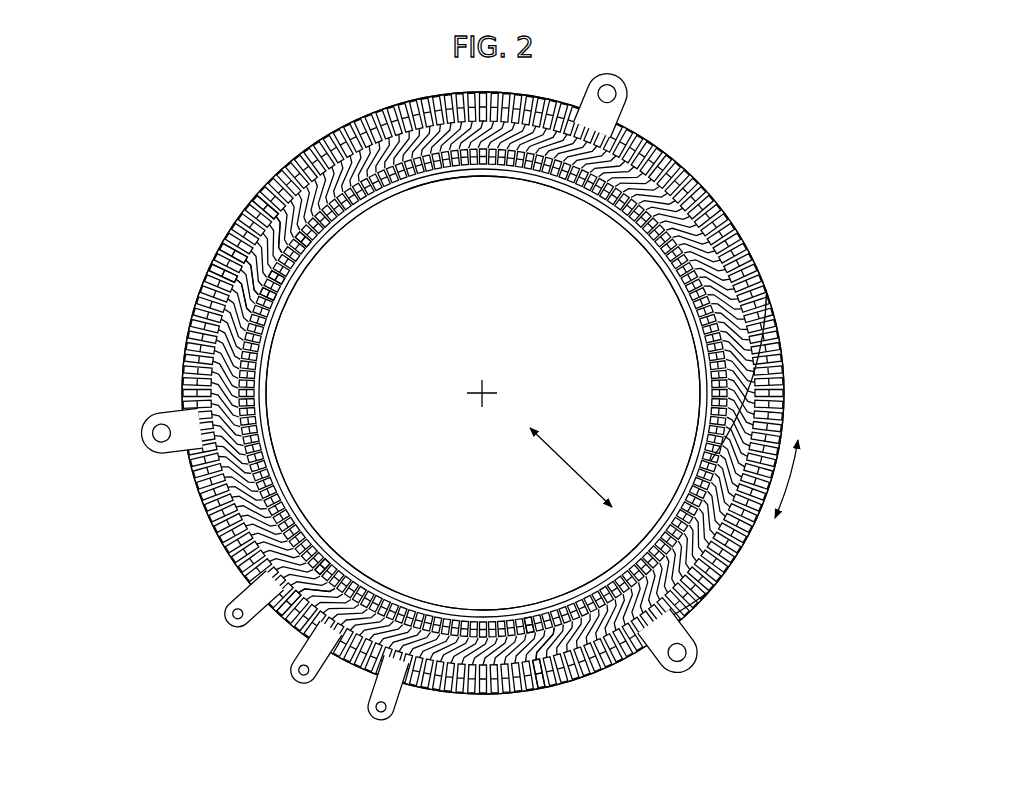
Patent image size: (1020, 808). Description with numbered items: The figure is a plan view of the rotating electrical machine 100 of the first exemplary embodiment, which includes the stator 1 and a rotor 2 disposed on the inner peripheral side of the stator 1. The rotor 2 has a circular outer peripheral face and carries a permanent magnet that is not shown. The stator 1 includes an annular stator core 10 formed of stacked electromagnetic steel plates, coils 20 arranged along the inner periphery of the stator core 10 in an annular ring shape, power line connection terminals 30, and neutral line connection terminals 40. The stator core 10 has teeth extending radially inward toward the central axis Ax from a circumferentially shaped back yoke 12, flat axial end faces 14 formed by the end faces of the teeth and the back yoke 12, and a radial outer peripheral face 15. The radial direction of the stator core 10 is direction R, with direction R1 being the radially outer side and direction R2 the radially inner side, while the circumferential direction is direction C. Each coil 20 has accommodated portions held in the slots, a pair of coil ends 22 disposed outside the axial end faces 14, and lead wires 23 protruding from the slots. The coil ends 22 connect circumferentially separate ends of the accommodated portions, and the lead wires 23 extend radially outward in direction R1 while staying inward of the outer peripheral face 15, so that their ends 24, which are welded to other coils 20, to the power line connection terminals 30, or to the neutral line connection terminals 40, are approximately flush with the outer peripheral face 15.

The rotating electrical machine 100 is at (135, 145).
The stator 1 is at (185, 310).
The rotor 2 is at (680, 333).
The stator core 10 is at (197, 503).
The back yoke 12 is at (693, 610).
The axial end faces 14 is at (648, 650).
The outer peripheral face 15 is at (722, 578).
The coils 20 is at (262, 195).
The coil ends 22 is at (270, 293).
The lead wires 23 is at (310, 245).
The ends 24 is at (222, 240).
The power line connection terminals 30 is at (215, 622).
The neutral line connection terminals 40 is at (280, 620).
The central axis Ax is at (487, 388).
The radial direction R is at (571, 467).
The radially outer side R1 is at (622, 515).
The radially inner side R2 is at (512, 418).
The circumferential direction C is at (791, 479).